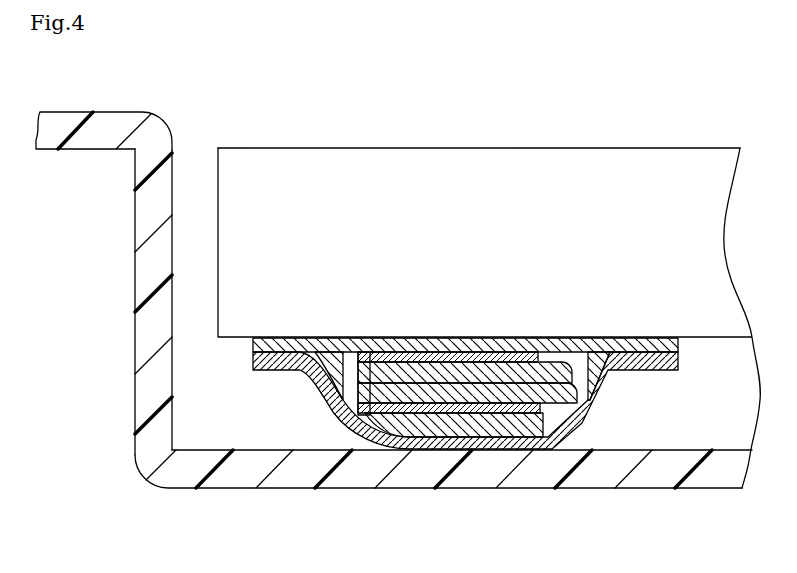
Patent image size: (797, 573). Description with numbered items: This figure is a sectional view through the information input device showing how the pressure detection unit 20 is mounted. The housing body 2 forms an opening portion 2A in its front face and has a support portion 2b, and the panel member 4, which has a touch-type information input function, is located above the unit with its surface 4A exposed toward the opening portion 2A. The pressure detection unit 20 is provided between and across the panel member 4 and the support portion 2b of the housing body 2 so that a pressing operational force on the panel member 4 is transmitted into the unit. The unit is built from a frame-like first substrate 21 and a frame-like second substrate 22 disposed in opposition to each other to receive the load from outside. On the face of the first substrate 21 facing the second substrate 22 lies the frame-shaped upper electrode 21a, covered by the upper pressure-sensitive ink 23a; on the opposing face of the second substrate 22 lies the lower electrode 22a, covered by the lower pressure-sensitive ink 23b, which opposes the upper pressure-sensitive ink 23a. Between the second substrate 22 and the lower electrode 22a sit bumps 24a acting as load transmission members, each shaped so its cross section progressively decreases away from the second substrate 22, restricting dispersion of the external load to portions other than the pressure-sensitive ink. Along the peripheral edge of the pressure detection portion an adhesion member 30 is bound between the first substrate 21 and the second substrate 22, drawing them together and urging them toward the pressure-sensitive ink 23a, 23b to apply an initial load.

The housing body 2 is at (76, 112).
The opening portion 2A is at (200, 148).
The support portion 2b is at (247, 450).
The panel member 4 is at (700, 150).
The surface of component 4A is at (400, 147).
The pressure detection unit 20 is at (468, 443).
The first substrate 21 is at (425, 344).
The upper electrode 21a is at (493, 355).
The second substrate 22 is at (612, 395).
The lower electrode 22a is at (527, 416).
The upper pressure-sensitive ink 23a is at (363, 354).
The lower pressure-sensitive ink 23b is at (362, 412).
The bump 24a is at (477, 428).
The adhesion member 30 is at (612, 352).